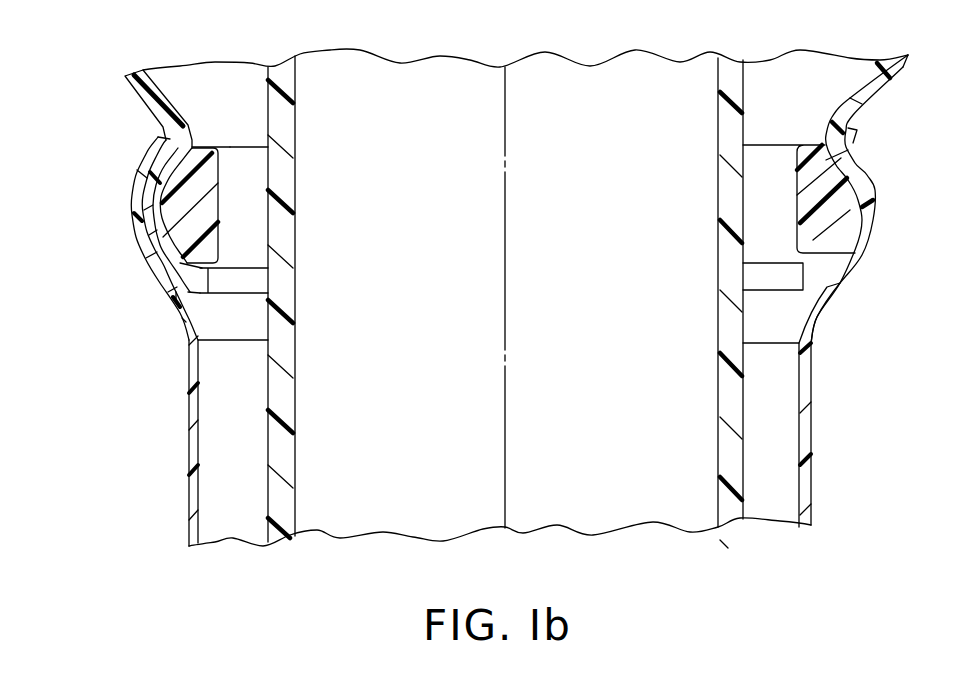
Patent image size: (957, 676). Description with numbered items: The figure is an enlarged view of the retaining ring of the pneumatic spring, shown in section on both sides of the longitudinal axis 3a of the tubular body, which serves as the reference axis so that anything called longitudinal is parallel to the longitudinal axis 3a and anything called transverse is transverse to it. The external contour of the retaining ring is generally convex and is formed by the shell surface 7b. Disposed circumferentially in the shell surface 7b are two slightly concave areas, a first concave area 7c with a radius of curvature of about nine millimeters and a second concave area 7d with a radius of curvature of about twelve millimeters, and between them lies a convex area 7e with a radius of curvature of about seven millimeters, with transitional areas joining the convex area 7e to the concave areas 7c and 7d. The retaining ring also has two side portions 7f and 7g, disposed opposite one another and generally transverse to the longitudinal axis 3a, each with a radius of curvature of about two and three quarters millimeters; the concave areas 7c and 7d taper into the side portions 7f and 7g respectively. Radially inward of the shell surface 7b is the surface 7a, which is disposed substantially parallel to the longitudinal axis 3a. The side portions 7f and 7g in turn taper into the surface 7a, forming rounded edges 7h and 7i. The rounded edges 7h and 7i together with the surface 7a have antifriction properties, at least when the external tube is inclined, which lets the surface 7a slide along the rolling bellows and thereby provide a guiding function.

The surface 7a is at (220, 215).
The shell surface 7b is at (192, 179).
The concave area 7c is at (153, 163).
The concave area 7d is at (163, 258).
The convex area 7e is at (160, 211).
The side portion 7f is at (196, 147).
The side portion 7g is at (175, 305).
The rounded edge 7h is at (221, 147).
The rounded edge 7i is at (228, 263).
The longitudinal axis 3a is at (505, 455).